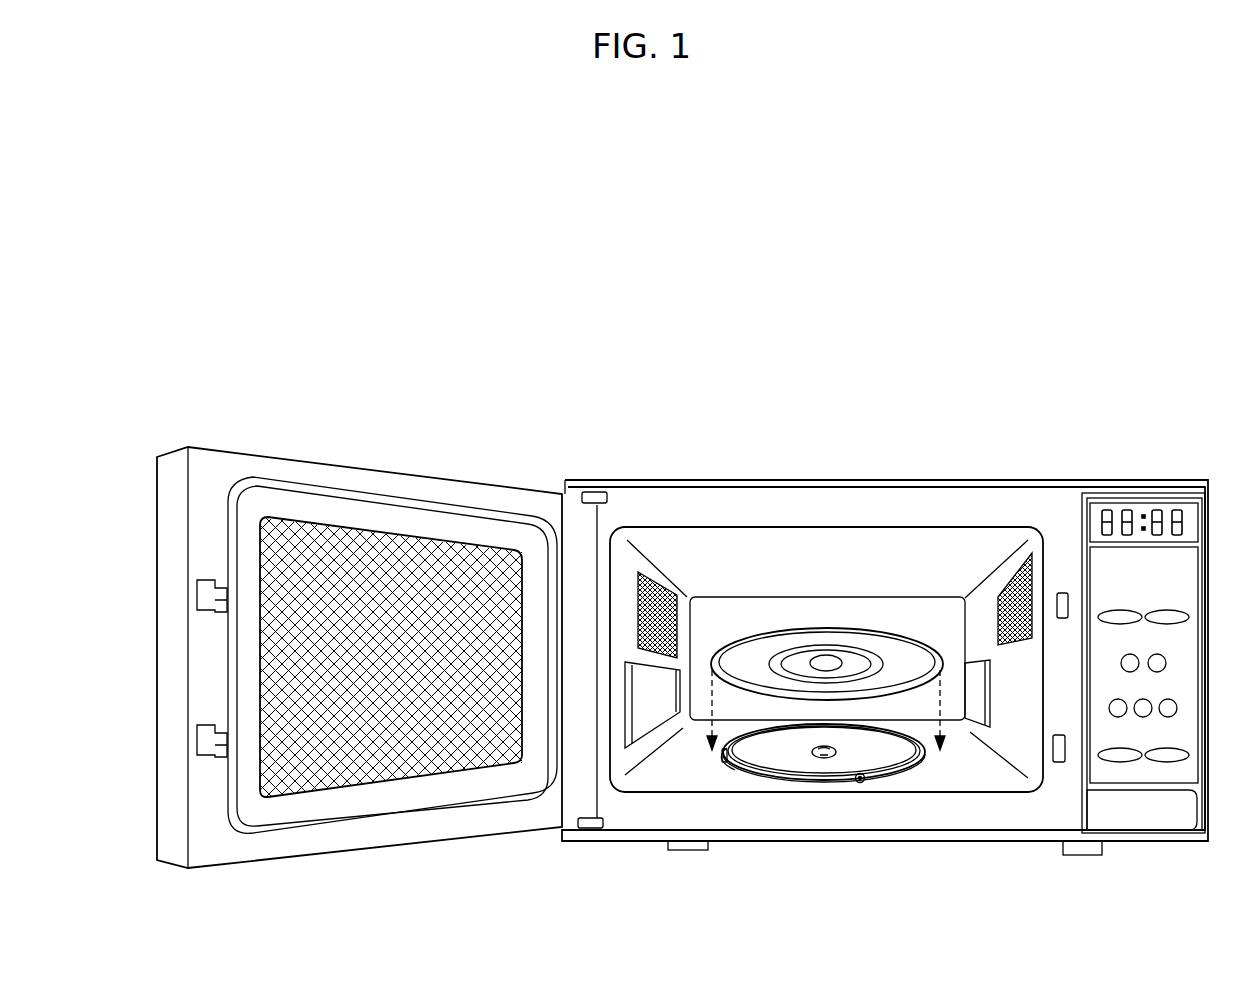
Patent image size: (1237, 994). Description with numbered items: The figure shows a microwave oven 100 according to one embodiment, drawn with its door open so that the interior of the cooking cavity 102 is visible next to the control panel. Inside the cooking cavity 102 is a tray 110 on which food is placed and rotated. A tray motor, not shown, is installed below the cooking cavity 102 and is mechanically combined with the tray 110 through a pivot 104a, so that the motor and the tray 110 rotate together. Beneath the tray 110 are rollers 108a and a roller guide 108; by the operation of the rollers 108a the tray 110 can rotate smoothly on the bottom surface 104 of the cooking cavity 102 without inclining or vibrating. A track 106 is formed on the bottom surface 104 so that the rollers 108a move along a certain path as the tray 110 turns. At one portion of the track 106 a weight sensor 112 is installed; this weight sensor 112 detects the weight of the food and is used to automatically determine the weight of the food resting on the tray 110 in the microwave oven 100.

The microwave oven 100 is at (751, 476).
The cooking cavity 102 is at (832, 590).
The bottom surface 104 is at (702, 774).
The pivot 104a is at (833, 762).
The track 106 is at (773, 783).
The roller guide 108 is at (920, 773).
The rollers 108a is at (866, 787).
The tray 110 is at (893, 650).
The weight sensor 112 is at (732, 767).